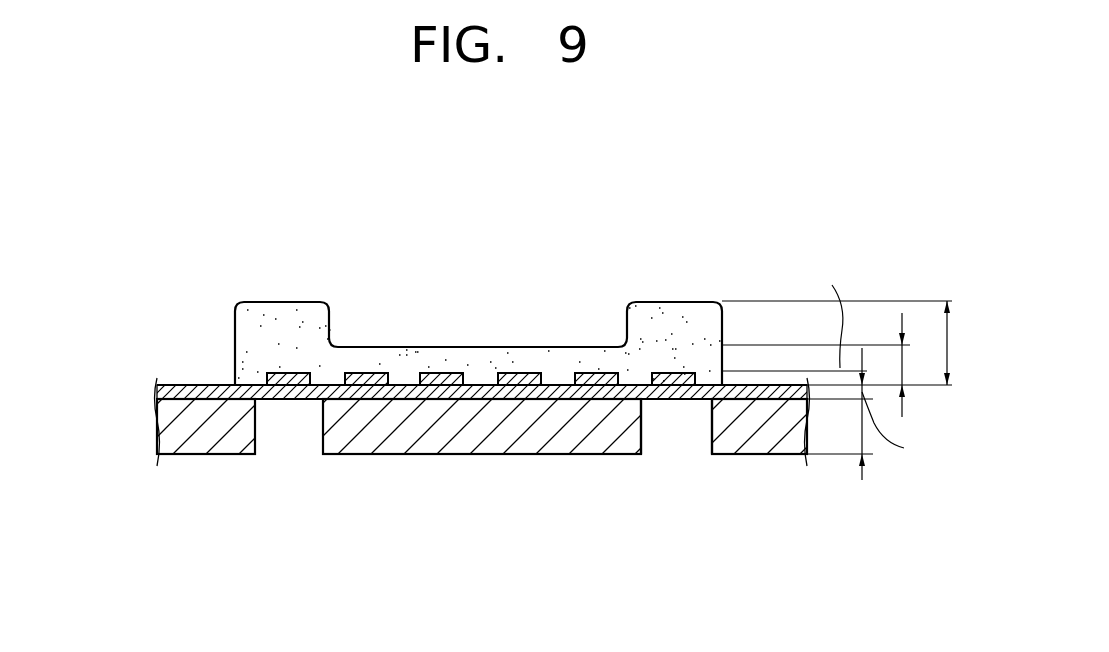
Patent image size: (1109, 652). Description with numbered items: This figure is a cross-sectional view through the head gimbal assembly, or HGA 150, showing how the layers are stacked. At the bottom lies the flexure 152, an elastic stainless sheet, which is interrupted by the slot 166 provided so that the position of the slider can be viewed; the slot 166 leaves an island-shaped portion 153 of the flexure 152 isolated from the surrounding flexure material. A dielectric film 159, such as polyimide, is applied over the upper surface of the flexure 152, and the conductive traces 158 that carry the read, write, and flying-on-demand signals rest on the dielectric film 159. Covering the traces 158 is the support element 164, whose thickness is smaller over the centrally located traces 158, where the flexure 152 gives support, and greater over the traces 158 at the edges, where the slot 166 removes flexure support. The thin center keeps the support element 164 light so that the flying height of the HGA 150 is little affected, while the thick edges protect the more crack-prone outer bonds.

The HGA 150 is at (145, 306).
The flexure 152 is at (768, 437).
The portion 153 is at (485, 443).
The traces 158 is at (510, 373).
The dielectric film 159 is at (568, 400).
The support element 164 is at (282, 320).
The slot 166 is at (675, 437).